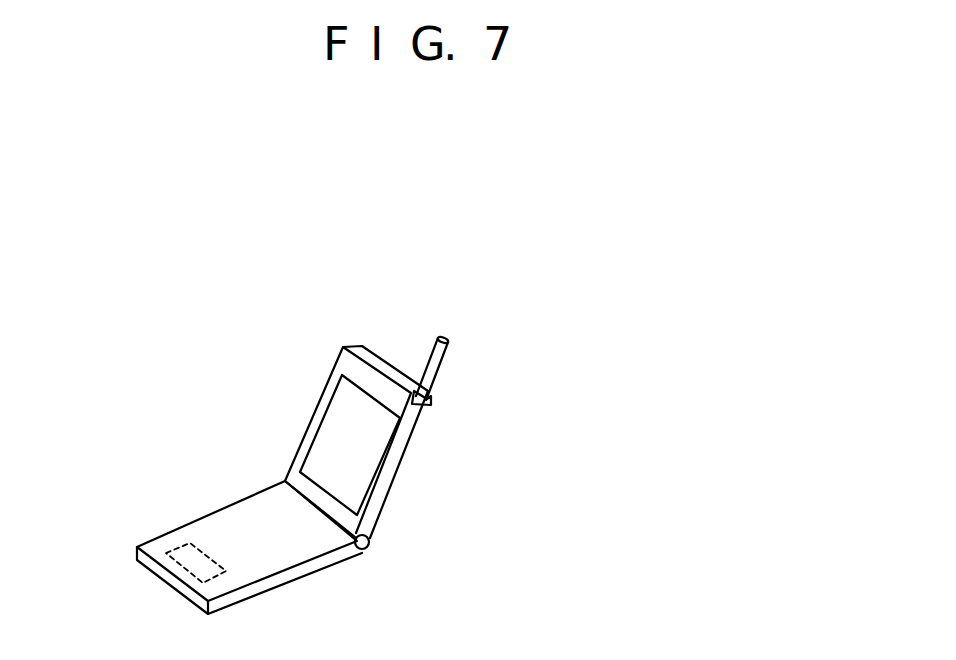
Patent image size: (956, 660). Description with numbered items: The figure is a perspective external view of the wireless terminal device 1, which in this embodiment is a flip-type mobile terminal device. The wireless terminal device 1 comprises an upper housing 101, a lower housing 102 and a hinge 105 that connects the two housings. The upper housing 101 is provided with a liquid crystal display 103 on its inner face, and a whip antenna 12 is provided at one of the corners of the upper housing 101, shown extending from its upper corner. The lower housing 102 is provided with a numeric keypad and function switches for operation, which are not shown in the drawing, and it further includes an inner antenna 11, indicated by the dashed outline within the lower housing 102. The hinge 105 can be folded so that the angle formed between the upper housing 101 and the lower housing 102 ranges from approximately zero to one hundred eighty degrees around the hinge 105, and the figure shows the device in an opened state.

The wireless terminal device 1 is at (283, 412).
The inner antenna 11 is at (217, 577).
The whip antenna 12 is at (443, 363).
The upper housing 101 is at (419, 427).
The lower housing 102 is at (202, 515).
The liquid crystal display 103 is at (362, 463).
The hinge 105 is at (367, 549).